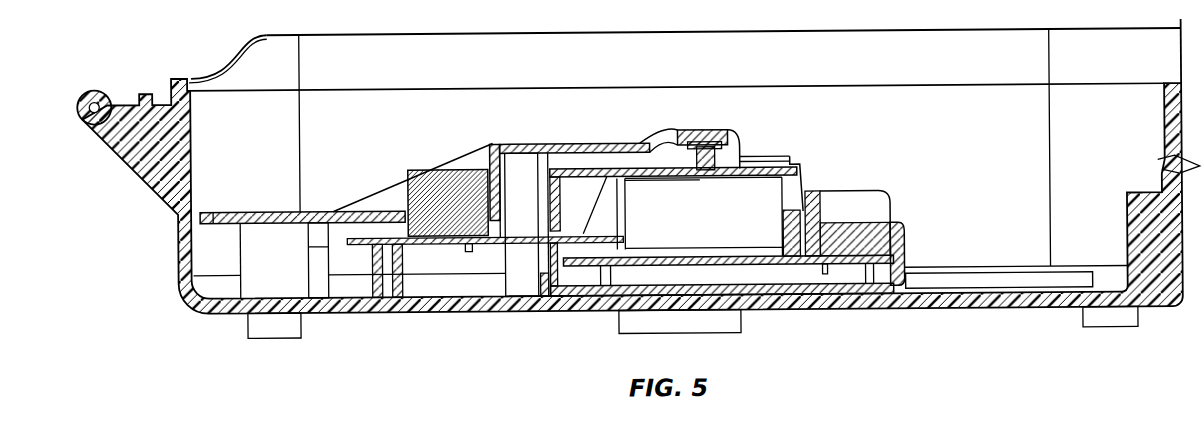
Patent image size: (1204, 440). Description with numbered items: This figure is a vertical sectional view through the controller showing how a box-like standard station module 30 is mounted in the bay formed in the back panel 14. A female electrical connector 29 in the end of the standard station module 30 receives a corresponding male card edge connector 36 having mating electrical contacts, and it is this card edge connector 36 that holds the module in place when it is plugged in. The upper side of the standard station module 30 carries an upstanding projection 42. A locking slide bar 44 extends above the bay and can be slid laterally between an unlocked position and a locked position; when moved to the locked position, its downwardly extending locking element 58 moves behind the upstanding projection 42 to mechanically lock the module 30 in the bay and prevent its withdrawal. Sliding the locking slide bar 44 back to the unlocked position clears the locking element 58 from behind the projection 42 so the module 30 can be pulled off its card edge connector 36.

The back panel 14 is at (388, 316).
The female electrical connector 29 is at (530, 314).
The standard station module 30 is at (748, 160).
The male card edge connector 36 is at (600, 250).
The upstanding projection 42 is at (683, 183).
The locking slide bar 44 is at (690, 131).
The locking element 58 is at (712, 175).